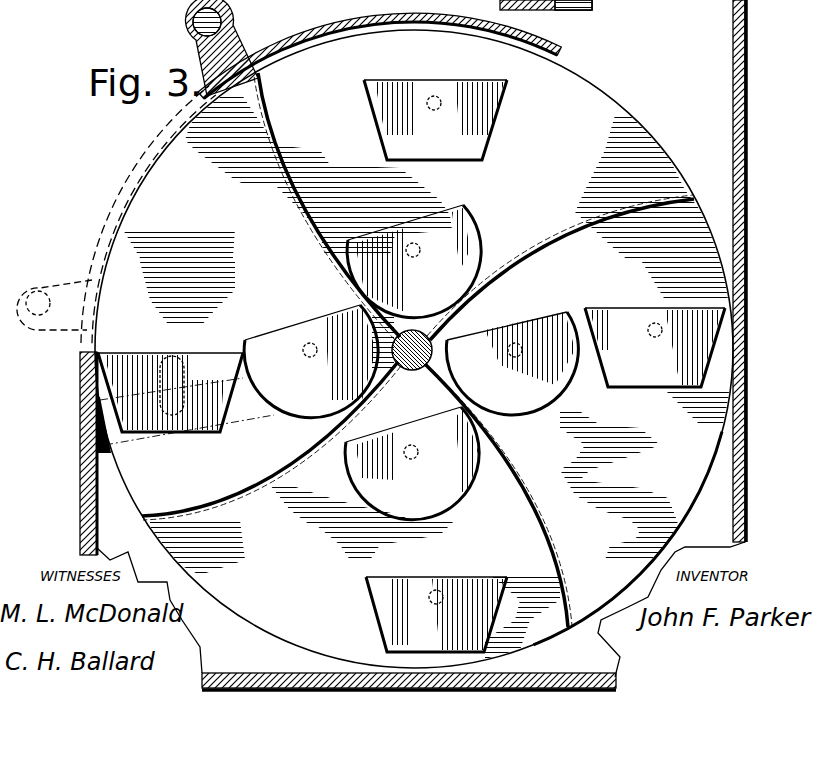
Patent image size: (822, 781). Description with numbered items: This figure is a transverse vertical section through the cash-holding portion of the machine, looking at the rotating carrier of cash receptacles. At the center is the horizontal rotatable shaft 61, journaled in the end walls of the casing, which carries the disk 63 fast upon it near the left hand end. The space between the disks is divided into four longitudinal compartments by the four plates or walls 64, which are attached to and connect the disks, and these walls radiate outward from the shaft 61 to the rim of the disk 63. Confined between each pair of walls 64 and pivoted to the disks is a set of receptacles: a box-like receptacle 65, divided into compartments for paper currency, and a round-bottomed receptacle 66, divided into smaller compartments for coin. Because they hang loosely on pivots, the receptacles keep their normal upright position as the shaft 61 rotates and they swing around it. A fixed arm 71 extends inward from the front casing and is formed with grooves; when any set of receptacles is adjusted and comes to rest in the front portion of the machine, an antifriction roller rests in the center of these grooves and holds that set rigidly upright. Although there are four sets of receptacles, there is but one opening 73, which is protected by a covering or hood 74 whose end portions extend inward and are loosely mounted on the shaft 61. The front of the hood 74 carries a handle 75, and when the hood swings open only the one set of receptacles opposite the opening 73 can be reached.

The horizontal rotatable shaft 61 is at (434, 340).
The disk 63 is at (415, 349).
The plates or walls 64 is at (318, 233).
The box-like receptacle 65 is at (411, 366).
The round-bottomed receptacle 66 is at (411, 362).
The fixed arm 71 is at (104, 453).
The opening 73 is at (112, 212).
The covering or hood 74 is at (470, 15).
The handle 75 is at (194, 26).